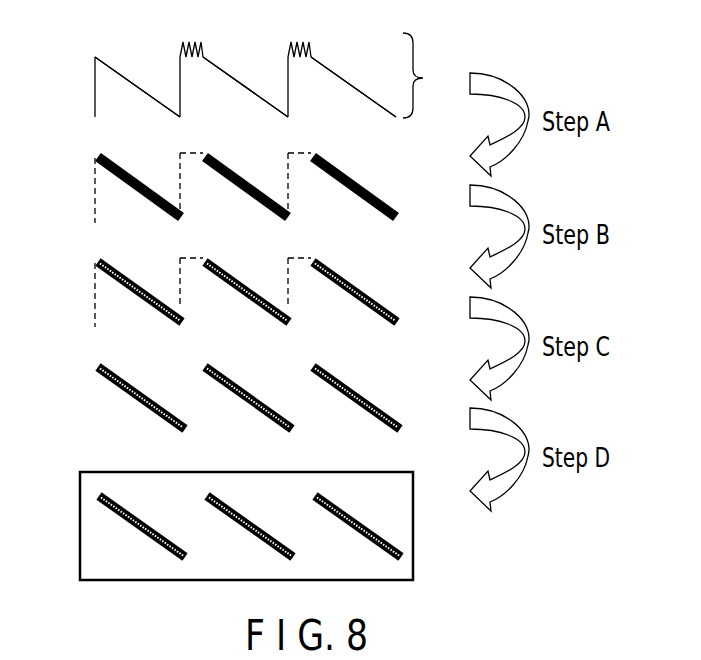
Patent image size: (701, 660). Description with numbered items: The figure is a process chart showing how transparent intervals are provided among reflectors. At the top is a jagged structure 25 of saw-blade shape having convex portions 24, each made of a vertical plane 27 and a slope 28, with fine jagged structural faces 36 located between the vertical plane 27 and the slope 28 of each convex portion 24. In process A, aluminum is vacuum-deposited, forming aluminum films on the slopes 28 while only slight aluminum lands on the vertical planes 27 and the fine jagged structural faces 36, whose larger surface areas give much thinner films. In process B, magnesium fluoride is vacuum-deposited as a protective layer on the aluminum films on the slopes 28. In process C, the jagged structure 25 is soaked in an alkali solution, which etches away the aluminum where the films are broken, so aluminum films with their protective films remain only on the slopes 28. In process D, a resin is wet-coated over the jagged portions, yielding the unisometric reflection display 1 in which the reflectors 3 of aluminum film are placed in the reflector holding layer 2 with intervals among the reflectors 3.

The unisometric reflection display 1 is at (233, 509).
The reflector holding layer 2 is at (408, 525).
The reflectors 3 is at (130, 512).
The convex portions 24 is at (117, 100).
The jagged structure 25 is at (239, 75).
The vertical plane 27 is at (93, 78).
The slope 28 is at (144, 90).
The fine jagged structural faces 36 is at (190, 33).